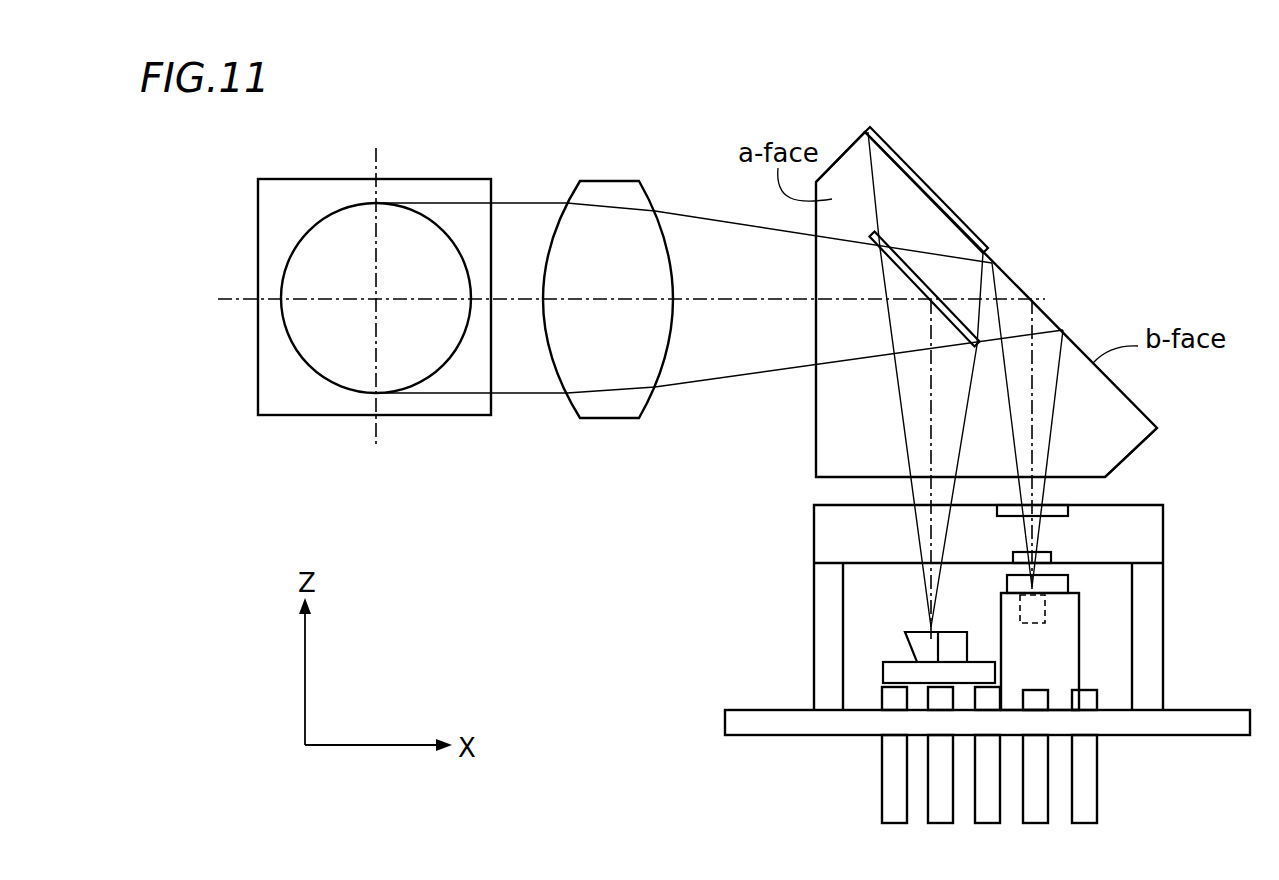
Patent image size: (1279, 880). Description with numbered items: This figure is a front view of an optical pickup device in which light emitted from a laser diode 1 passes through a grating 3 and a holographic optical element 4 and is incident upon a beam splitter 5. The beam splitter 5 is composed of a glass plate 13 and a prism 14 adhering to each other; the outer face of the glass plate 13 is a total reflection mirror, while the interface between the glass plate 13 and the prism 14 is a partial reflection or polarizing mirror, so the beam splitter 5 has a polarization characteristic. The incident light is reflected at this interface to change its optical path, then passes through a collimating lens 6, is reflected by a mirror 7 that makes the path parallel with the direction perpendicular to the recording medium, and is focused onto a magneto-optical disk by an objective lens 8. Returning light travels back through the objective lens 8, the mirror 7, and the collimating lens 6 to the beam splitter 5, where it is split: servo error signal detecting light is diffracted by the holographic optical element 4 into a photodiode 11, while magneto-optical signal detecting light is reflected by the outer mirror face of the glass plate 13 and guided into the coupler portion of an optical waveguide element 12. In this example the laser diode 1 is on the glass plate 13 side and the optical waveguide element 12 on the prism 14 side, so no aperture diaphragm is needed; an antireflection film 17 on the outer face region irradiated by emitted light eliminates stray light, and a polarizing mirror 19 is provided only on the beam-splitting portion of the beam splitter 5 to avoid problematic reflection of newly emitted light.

The laser diode 1 is at (1080, 620).
The grating 3 is at (1052, 558).
The holographic optical element 4 is at (1132, 507).
The beam splitter 5 is at (843, 160).
The collimating lens 6 is at (617, 181).
The mirror 7 is at (282, 418).
The objective lens 8 is at (327, 212).
The photodiode 11 is at (1068, 587).
The optical waveguide element 12 is at (892, 673).
The glass plate 13 is at (1125, 432).
The prism 14 is at (828, 436).
The antireflection film 17 is at (910, 160).
The polarizing mirror 19 is at (915, 273).